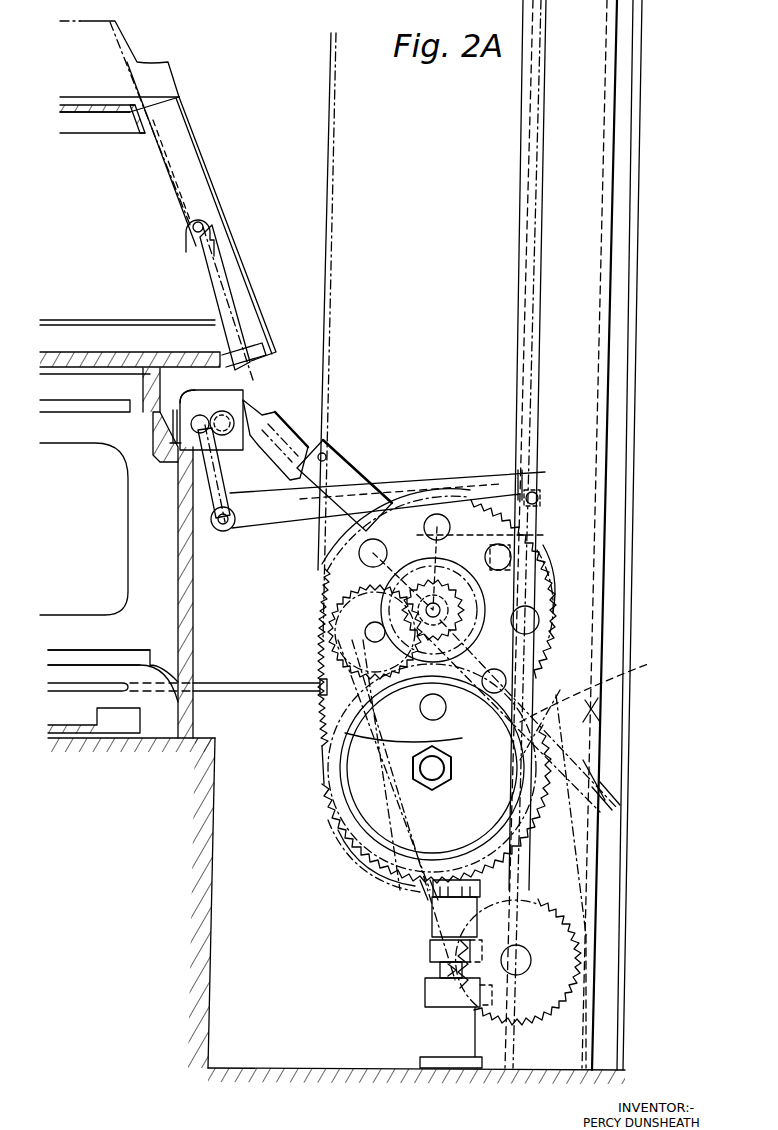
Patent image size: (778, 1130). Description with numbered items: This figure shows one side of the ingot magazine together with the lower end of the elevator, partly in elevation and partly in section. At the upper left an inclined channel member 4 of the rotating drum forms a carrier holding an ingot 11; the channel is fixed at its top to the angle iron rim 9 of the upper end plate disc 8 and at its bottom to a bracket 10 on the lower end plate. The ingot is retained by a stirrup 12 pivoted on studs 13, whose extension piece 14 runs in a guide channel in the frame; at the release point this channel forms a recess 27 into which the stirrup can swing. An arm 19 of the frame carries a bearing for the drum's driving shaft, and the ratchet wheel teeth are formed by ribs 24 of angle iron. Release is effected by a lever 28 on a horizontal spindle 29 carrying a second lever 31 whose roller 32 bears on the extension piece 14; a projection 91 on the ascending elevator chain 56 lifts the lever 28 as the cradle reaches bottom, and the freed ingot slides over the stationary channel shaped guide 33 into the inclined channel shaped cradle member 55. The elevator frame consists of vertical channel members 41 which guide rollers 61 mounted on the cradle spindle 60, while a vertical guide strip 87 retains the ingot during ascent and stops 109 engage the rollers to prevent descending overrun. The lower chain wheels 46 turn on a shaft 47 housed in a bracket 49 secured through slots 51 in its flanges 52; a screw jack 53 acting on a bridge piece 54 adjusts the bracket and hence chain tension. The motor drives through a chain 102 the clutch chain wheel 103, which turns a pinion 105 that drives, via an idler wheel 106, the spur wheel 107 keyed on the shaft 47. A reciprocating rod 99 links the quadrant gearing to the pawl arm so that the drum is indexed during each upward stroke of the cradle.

The ingot 11 is at (170, 70).
The channel member 4 is at (190, 168).
The disc 8 is at (72, 114).
The angle iron rim 9 is at (108, 127).
The stud 13 is at (192, 230).
The stirrup 12 is at (244, 302).
The bracket 10 is at (216, 350).
The arm 19 is at (70, 406).
The extension piece 14 is at (172, 441).
The recess 27 is at (160, 446).
The roller 32 is at (238, 432).
The second lever 31 is at (226, 476).
The horizontal spindle 29 is at (223, 532).
The lever 28 is at (277, 530).
The projection 91 is at (539, 496).
The channel shaped guide 33 is at (298, 422).
The channel shaped member 55 is at (352, 470).
The bracket 49 is at (408, 505).
The pinion 105 is at (407, 545).
The idler wheel 106 is at (345, 622).
The reciprocating rod 99 is at (265, 681).
The rib 24 is at (128, 712).
The spur wheel 107 is at (317, 760).
The slot 51 is at (452, 737).
The shaft 47 is at (432, 792).
The chain wheel 46 is at (368, 870).
The bridge piece 54 is at (440, 910).
The screw jack 53 is at (432, 995).
The chain wheel 103 is at (540, 598).
The flange 52 is at (548, 585).
The horizontal spindle 60 is at (610, 700).
The guide roller 61 is at (630, 712).
The stop 109 is at (612, 797).
The chain 102 is at (578, 866).
The chain 56 is at (335, 236).
The vertical guide strip 87 is at (642, 153).
The channel member 41 is at (585, 272).